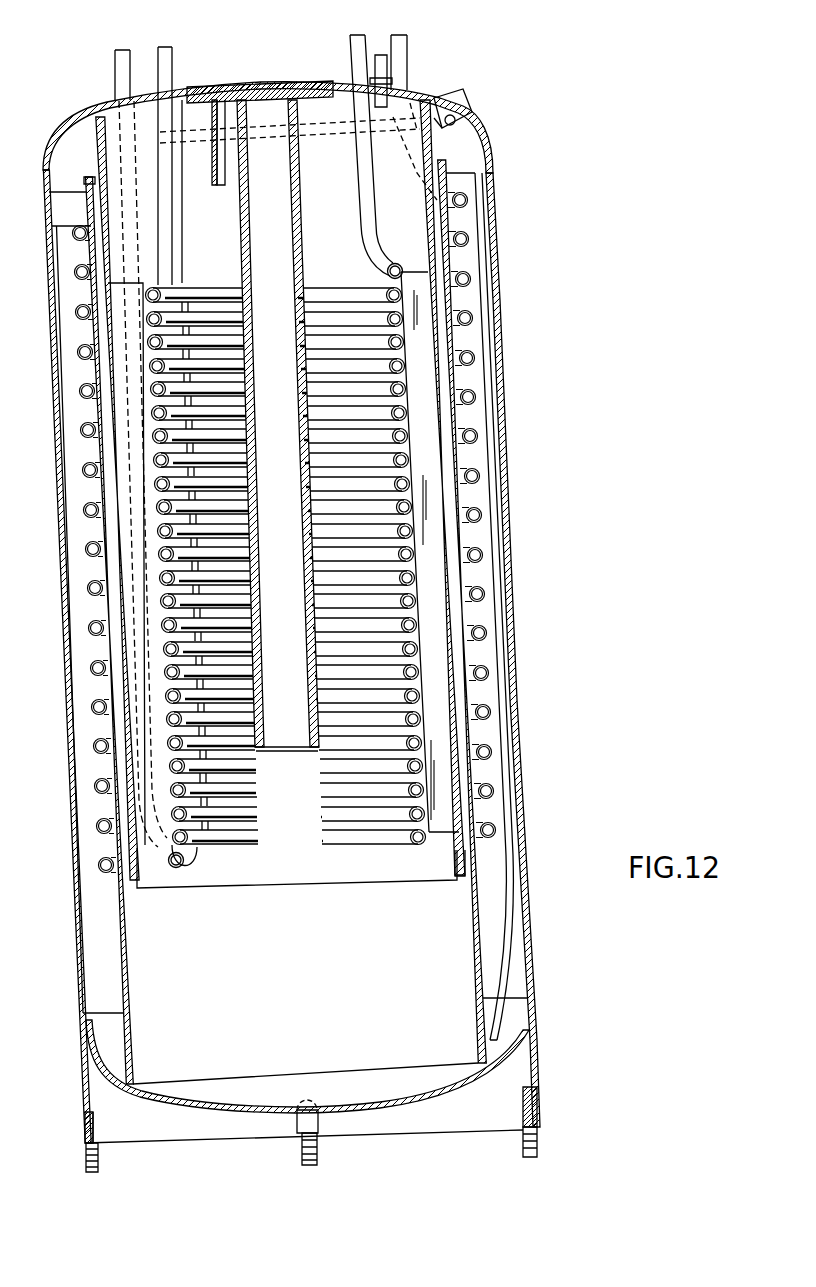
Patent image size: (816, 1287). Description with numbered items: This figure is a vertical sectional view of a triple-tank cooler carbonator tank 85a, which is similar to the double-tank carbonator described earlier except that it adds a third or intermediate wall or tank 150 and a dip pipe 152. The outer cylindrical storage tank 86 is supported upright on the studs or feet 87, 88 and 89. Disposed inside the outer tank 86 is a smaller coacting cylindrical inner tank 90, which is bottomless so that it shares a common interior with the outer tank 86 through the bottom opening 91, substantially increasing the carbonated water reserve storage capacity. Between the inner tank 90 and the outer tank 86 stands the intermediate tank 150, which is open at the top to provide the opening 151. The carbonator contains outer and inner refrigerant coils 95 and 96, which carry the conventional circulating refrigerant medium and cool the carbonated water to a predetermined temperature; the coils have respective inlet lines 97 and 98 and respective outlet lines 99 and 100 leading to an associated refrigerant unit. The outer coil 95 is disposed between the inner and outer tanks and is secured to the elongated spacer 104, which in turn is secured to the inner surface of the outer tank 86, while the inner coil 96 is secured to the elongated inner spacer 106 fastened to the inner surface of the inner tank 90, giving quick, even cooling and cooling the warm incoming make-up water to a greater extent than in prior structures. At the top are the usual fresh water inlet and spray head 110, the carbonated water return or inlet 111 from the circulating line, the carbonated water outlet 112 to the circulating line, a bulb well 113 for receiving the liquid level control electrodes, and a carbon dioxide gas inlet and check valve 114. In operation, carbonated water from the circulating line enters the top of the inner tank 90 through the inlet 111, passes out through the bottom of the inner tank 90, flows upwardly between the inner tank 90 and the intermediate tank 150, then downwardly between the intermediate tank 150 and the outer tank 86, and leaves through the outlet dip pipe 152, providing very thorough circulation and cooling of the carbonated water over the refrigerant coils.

The triple-tank cooler carbonator tank 85a is at (508, 446).
The outer cylindrical storage tank 86 is at (522, 752).
The stud or foot 87 is at (98, 1162).
The stud or foot 88 is at (318, 1155).
The stud or foot 89 is at (520, 1145).
The inner tank 90 is at (437, 527).
The bottom opening 91 is at (262, 885).
The outer refrigerant coil 95 is at (480, 600).
The inner refrigerant coil 96 is at (413, 503).
The inlet line 97 is at (118, 62).
The inlet line 98 is at (158, 62).
The outlet line 99 is at (405, 48).
The outlet line 100 is at (348, 48).
The elongated spacer 104 is at (517, 870).
The elongated inner spacer 106 is at (445, 862).
The fresh water inlet and spray head 110 is at (213, 150).
The carbonated water return or inlet 111 is at (305, 85).
The carbonated water outlet 112 is at (465, 98).
The bulb well 113 is at (297, 100).
The carbon dioxide gas inlet and check valve 114 is at (376, 55).
The intermediate wall or tank 150 is at (460, 377).
The opening 151 is at (100, 182).
The outlet dip pipe 152 is at (480, 300).